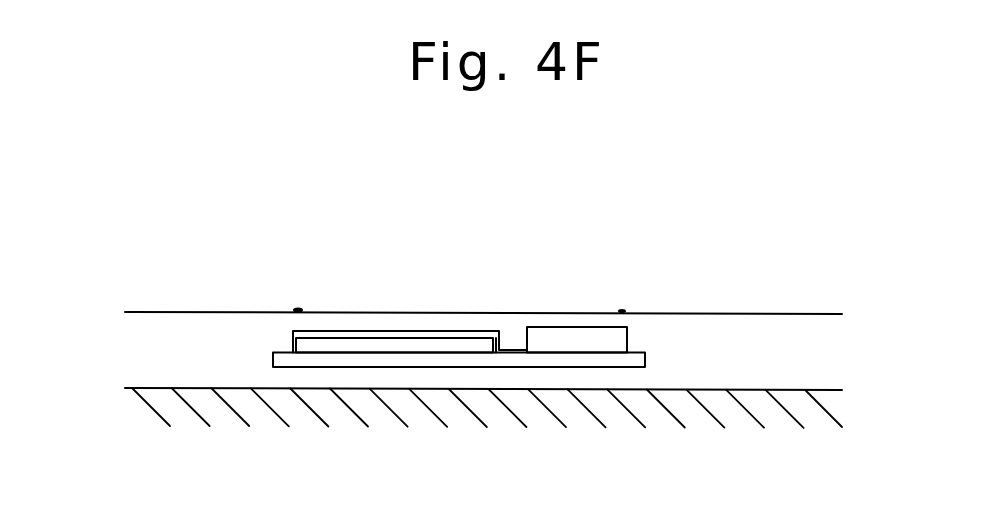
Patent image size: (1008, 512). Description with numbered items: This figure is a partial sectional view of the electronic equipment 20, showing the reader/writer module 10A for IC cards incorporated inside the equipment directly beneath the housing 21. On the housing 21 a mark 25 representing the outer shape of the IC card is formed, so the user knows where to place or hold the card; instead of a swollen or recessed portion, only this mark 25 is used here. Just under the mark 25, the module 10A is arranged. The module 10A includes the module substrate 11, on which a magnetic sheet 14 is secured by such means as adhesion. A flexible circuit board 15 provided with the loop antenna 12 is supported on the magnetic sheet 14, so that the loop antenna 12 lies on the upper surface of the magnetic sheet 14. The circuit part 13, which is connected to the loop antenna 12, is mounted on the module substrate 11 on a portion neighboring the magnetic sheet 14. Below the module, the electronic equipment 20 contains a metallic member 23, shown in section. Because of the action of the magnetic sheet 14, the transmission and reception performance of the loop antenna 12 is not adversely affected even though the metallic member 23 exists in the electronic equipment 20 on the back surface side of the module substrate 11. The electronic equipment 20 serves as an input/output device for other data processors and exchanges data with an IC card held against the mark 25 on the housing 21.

The reader/writer module 10A is at (645, 334).
The module substrate 11 is at (573, 362).
The loop antenna 12 is at (410, 287).
The circuit part 13 is at (578, 331).
The magnetic sheet 14 is at (378, 343).
The flexible circuit board 15 is at (340, 331).
The electronic equipment 20 is at (690, 201).
The housing 21 is at (748, 313).
The metallic member 23 is at (787, 390).
The mark 25 is at (292, 306).